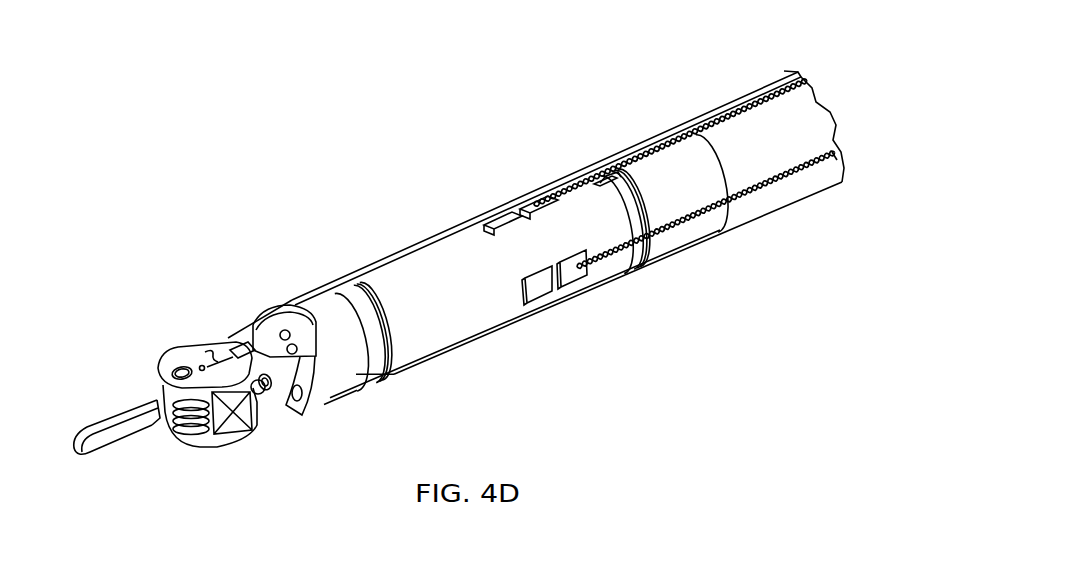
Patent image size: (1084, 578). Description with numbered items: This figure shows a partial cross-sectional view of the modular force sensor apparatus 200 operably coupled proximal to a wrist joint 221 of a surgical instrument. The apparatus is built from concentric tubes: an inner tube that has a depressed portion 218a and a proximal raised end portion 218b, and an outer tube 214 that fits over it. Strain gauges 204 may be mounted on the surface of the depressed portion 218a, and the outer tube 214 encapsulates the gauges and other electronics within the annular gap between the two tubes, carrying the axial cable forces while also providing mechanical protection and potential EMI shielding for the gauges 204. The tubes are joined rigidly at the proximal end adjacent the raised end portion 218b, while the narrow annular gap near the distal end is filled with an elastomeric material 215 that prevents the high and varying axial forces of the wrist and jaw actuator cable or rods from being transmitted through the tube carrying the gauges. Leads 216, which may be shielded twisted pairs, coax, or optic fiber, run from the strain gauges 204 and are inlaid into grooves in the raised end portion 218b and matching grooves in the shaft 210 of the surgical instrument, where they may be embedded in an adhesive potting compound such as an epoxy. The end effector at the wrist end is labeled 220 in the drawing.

The modular force sensor apparatus 200 is at (424, 119).
The strain gauges 204 is at (577, 273).
The shaft 210 is at (739, 126).
The outer tube 214 is at (447, 231).
The elastomeric material 215 is at (380, 282).
The leads 216 is at (650, 158).
The depressed portion 218a is at (480, 322).
The proximal raised end portion 218b is at (699, 195).
The end effector 220 is at (162, 330).
The wrist joint 221 is at (313, 303).